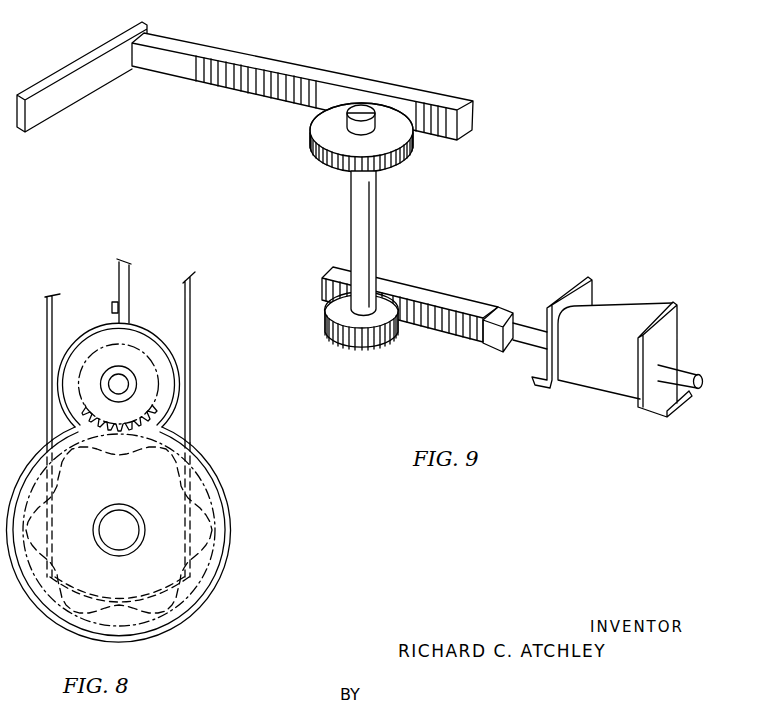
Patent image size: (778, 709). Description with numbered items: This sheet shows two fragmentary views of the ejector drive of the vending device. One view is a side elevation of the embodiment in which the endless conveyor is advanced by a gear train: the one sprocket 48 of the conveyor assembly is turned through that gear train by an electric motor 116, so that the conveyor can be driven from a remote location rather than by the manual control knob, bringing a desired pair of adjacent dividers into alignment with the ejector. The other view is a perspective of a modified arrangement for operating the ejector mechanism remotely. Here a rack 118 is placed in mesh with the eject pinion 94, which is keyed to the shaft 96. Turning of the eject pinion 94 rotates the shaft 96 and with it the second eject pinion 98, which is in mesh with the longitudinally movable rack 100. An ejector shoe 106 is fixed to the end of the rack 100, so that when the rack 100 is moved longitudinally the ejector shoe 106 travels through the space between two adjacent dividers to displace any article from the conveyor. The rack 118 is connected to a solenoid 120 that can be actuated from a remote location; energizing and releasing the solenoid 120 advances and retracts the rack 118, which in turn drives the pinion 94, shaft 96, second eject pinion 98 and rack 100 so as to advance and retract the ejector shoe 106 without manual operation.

In FIG. 8, the sprocket 48 is at (207, 530).
In FIG. 9, the eject pinion 94 is at (386, 337).
In FIG. 9, the shaft 96 is at (373, 233).
In FIG. 9, the second eject pinion 98 is at (412, 150).
In FIG. 9, the rack 100 is at (298, 76).
In FIG. 9, the ejector shoe 106 is at (68, 62).
In FIG. 8, the electric motor 116 is at (145, 325).
In FIG. 9, the rack 118 is at (443, 298).
In FIG. 9, the solenoid 120 is at (607, 300).